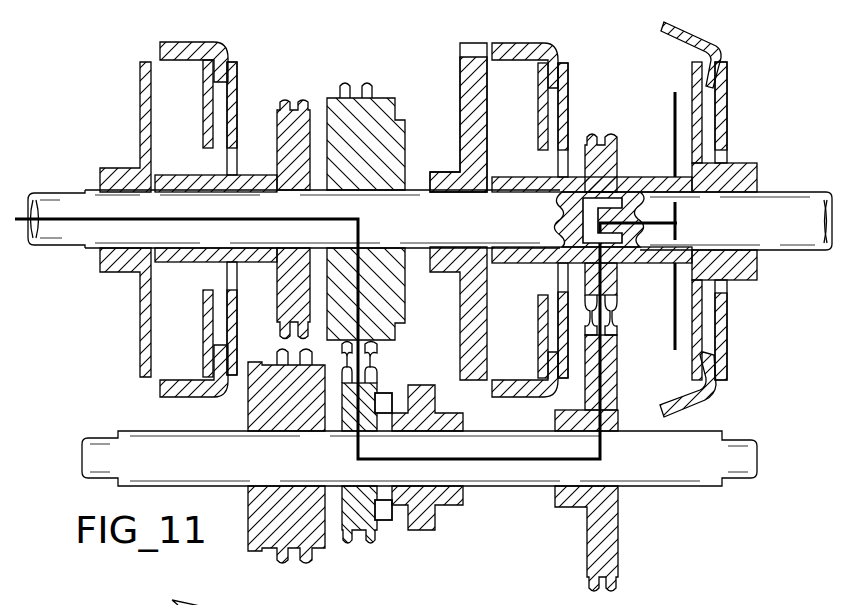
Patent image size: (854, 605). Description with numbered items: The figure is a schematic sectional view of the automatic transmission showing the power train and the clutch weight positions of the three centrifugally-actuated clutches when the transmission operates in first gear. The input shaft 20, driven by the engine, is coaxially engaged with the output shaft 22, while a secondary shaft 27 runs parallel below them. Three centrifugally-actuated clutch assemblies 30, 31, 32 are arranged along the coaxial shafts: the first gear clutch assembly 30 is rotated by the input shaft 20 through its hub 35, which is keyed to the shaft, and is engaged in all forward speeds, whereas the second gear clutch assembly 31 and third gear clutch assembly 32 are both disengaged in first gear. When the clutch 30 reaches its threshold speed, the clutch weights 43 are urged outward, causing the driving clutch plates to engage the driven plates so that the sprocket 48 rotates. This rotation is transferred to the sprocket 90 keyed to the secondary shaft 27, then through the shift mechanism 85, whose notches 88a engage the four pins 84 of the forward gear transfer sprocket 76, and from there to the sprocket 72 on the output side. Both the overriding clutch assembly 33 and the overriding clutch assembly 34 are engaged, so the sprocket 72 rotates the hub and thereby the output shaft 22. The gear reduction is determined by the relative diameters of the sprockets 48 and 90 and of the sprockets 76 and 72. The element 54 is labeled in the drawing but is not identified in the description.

The input shaft 20 is at (776, 225).
The output shaft 22 is at (284, 215).
The secondary shaft 27 is at (659, 464).
The first gear clutch assembly 30 is at (733, 52).
The second gear clutch assembly 31 is at (232, 47).
The third gear clutch assembly 32 is at (561, 52).
The overriding clutch assembly 33 is at (389, 93).
The overriding clutch assembly 34 is at (246, 497).
The hub 35 is at (745, 163).
The clutch weights 43 is at (667, 38).
The sprocket 48 is at (608, 135).
The gear 54 is at (132, 601).
The sprocket 72 is at (364, 97).
The forward gear transfer sprocket 76 is at (368, 545).
The pins 84 is at (380, 393).
The shift mechanism 85 is at (443, 511).
The notches 88a is at (394, 397).
The sprocket 90 is at (620, 554).